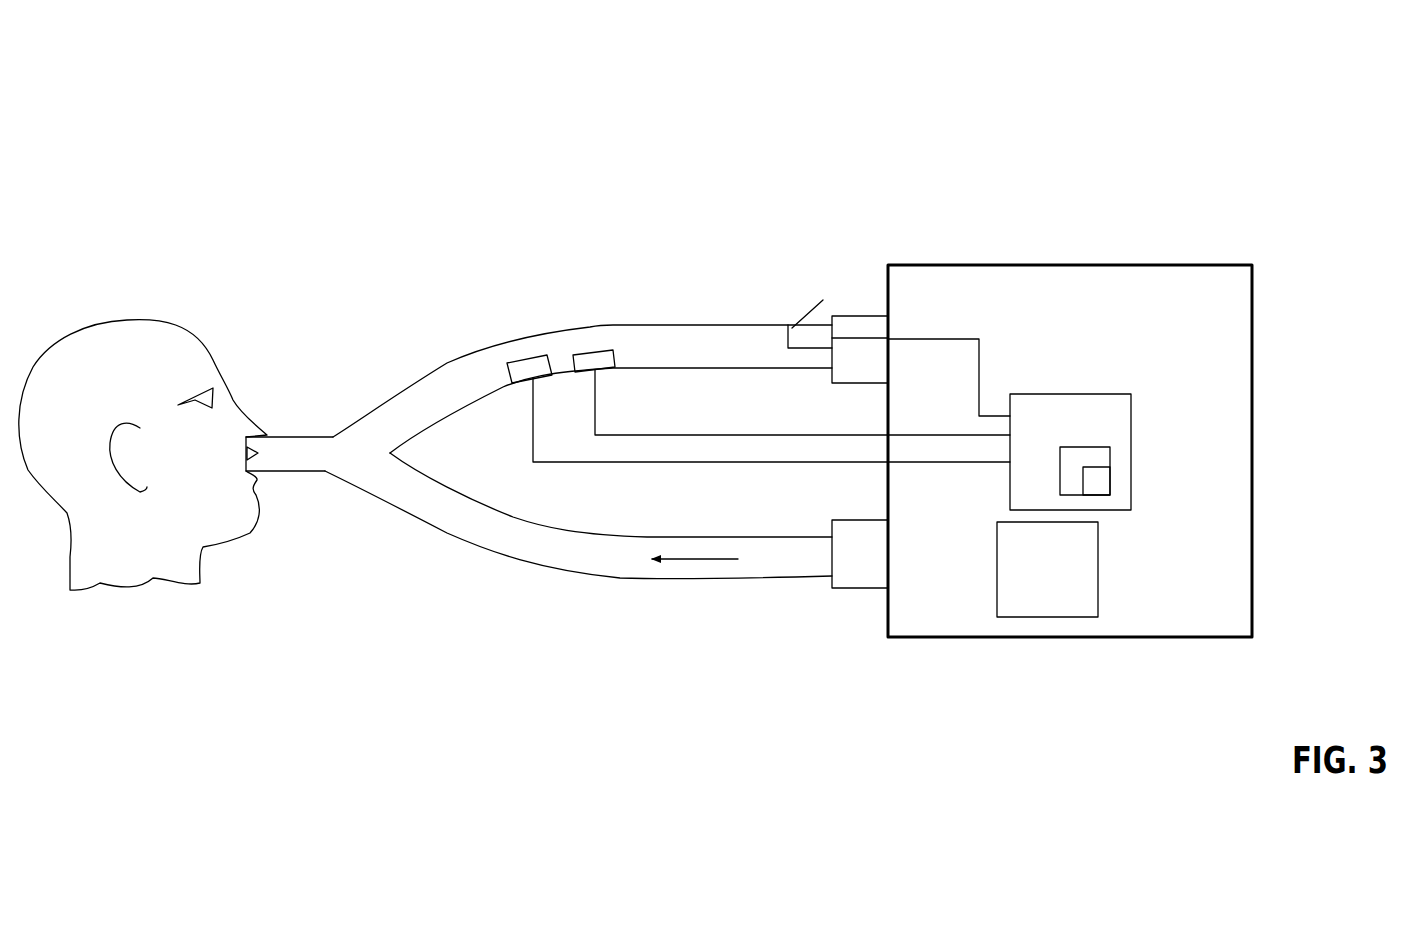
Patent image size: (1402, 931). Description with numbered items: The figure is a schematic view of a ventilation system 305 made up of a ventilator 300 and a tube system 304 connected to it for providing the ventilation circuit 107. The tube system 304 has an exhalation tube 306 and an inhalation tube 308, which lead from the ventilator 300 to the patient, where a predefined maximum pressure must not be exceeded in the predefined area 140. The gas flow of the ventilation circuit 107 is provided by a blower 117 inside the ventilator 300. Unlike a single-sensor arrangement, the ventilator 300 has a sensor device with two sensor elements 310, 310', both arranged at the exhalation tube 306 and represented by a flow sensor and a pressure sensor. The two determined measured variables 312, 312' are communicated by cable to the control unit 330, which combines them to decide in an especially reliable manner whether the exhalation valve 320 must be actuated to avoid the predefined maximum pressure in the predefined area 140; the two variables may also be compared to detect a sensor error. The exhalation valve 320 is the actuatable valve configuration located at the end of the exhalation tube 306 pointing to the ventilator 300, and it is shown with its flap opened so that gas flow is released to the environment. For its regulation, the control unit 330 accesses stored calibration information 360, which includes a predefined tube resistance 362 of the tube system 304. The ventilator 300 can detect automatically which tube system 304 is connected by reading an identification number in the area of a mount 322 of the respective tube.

The ventilator 300 is at (1194, 178).
The ventilation system 305 is at (467, 237).
The exhalation tube 306 is at (440, 365).
The inhalation tube 308 is at (622, 578).
The sensor element 310 is at (530, 307).
The sensor element 310' is at (608, 302).
The measured variable 312 is at (756, 527).
The measured variable 312' is at (949, 535).
The exhalation valve 320 is at (805, 337).
The mount 322 is at (863, 327).
The tube system 304 is at (793, 592).
The ventilation circuit 107 is at (695, 560).
The predefined area 140 is at (352, 452).
The control unit 330 is at (1088, 393).
The calibration information 360 is at (1095, 447).
The tube resistance 362 is at (1102, 482).
The blower 117 is at (1068, 575).